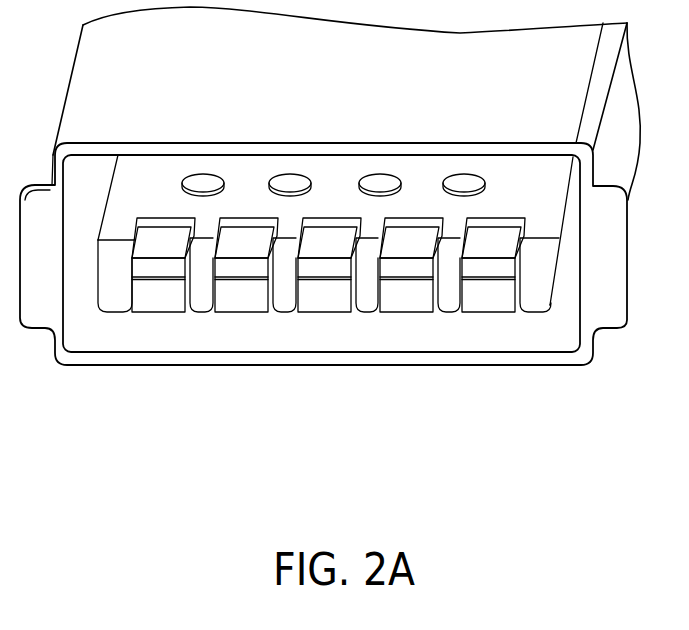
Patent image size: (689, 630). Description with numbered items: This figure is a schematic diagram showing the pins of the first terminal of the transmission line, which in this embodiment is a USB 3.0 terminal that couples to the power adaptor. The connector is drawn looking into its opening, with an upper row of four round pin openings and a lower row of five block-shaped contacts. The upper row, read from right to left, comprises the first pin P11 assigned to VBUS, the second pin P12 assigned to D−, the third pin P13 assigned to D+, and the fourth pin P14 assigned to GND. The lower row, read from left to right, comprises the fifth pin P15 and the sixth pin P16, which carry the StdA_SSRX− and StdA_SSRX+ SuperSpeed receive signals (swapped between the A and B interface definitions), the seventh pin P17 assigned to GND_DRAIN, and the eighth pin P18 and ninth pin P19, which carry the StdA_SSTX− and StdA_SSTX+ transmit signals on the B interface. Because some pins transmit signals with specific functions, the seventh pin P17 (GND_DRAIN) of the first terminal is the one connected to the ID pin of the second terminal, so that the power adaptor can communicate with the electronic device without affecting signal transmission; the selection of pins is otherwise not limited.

The first pin P11 is at (463, 181).
The second pin P12 is at (378, 181).
The third pin P13 is at (289, 181).
The fourth pin P14 is at (202, 181).
The fifth pin P15 is at (157, 298).
The sixth pin P16 is at (248, 298).
The seventh pin P17 is at (327, 298).
The eighth pin P18 is at (410, 298).
The ninth pin P19 is at (492, 298).